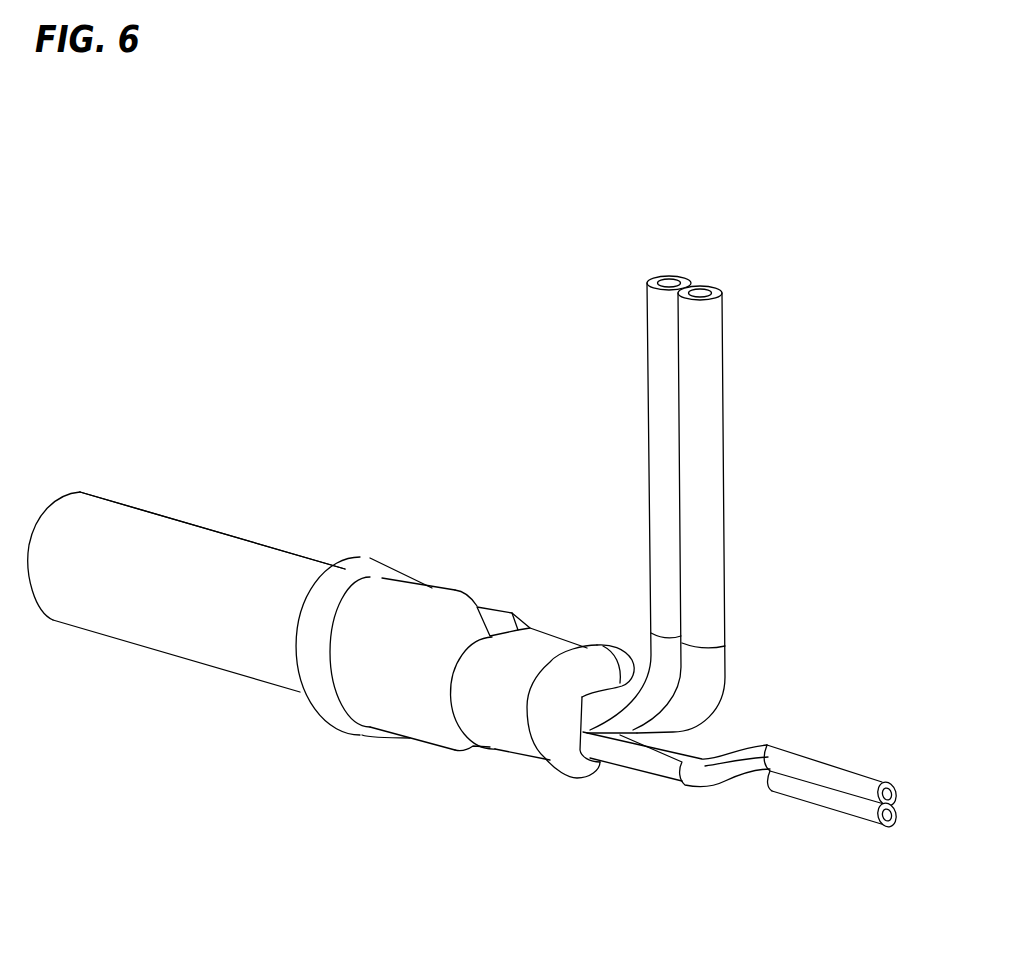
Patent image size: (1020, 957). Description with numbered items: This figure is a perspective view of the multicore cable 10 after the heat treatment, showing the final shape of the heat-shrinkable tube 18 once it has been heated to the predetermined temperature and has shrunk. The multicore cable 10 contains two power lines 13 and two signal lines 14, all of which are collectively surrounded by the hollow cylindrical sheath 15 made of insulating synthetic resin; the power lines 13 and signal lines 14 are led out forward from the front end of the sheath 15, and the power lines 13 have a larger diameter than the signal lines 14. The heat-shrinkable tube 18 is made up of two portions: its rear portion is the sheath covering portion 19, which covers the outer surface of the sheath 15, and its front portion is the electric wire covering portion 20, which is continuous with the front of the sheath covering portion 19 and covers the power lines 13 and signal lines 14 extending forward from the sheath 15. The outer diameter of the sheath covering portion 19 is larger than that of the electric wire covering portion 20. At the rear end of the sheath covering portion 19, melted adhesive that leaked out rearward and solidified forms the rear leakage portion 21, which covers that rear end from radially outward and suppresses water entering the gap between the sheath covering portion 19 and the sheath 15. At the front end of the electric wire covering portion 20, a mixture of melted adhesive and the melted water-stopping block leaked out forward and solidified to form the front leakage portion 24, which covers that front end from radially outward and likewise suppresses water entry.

The multicore cable 10 is at (186, 540).
The sheath 15 is at (250, 578).
The rear leakage portion 21 is at (377, 570).
The heat-shrinkable tube 18 is at (458, 751).
The sheath covering portion 19 is at (378, 697).
The electric wire covering portion 20 is at (510, 735).
The front leakage portion 24 is at (602, 665).
The power lines 13 is at (660, 378).
The signal lines 14 is at (850, 786).